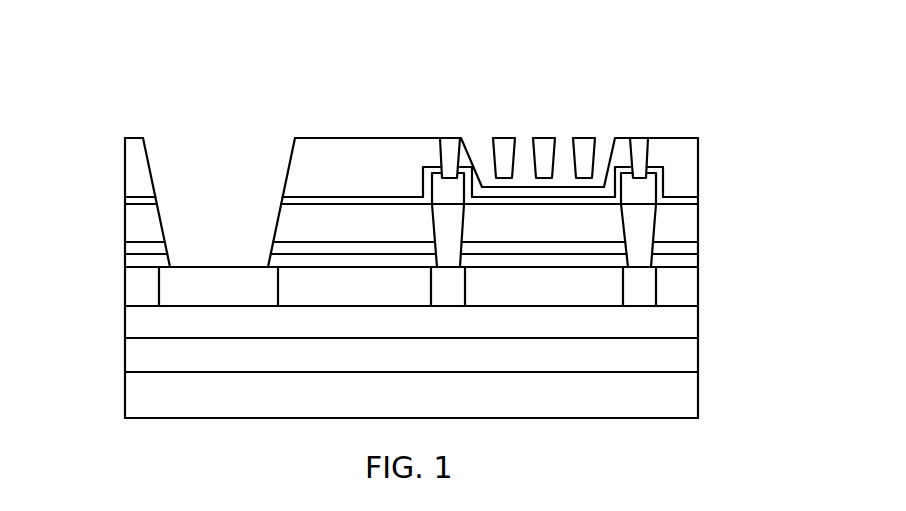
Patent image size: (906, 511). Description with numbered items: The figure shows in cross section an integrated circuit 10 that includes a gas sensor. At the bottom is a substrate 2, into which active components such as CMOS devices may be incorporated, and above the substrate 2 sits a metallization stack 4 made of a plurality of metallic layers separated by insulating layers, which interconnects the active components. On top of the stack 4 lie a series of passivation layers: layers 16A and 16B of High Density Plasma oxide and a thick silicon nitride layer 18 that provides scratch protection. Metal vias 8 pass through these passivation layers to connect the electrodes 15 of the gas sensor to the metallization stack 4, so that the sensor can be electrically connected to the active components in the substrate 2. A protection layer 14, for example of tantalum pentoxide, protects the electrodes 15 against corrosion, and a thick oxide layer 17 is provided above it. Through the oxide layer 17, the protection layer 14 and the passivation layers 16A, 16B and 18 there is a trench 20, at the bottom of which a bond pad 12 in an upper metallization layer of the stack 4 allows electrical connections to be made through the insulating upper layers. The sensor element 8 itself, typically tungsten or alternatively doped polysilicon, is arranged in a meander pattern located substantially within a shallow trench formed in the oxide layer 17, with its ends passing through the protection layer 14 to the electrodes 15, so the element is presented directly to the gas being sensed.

The semiconductor device 10 is at (745, 58).
The substrate 2 is at (677, 387).
The metallization stack 4 is at (711, 268).
The bond pad 12 is at (218, 288).
The passivation layer 16A is at (130, 260).
The passivation layer 16B is at (124, 247).
The oxide layer 17 is at (138, 185).
The passivation layer 18 is at (678, 225).
The trench 20 is at (167, 126).
The protection layer 14 is at (687, 195).
The electrodes 15 is at (666, 180).
The sensor element 8 is at (445, 145).